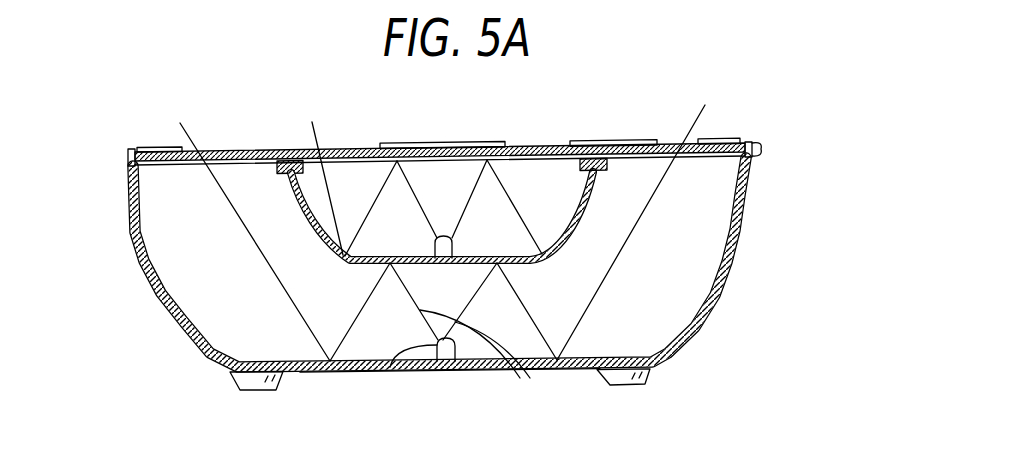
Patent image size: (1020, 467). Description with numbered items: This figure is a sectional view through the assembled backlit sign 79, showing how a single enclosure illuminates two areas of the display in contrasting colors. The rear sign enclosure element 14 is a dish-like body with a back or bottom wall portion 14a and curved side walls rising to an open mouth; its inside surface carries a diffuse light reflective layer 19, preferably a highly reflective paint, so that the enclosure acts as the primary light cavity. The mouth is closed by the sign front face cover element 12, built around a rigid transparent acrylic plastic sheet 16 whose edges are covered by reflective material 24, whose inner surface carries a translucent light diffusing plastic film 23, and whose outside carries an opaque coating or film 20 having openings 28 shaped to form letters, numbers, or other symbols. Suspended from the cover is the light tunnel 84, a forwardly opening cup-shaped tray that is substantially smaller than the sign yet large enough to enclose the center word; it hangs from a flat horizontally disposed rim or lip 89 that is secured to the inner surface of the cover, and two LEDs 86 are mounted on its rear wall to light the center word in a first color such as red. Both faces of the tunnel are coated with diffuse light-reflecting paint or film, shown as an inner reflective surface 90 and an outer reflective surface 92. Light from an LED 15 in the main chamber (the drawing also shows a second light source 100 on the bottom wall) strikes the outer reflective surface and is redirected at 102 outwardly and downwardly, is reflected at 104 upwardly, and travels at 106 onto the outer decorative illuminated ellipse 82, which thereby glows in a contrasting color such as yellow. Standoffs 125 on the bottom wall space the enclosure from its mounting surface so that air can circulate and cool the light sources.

The sign front face cover element 12 is at (763, 148).
The rear sign enclosure element 14 is at (742, 238).
The bottom wall portion 14a is at (477, 372).
The LED 15 is at (390, 367).
The transparent acrylic plastic sheet 16 is at (533, 147).
The diffuse light reflective layer 19 is at (152, 262).
The opaque coating or film 20 is at (715, 138).
The translucent light diffusing plastic film 23 is at (700, 160).
The edge reflective material 24 is at (128, 158).
The openings 28 is at (307, 200).
The sign 79 is at (124, 143).
The outer decorative illuminated ellipse 82 is at (213, 152).
The light tunnel 84 is at (297, 216).
The LEDs 86 is at (443, 234).
The rim or lip 89 is at (595, 172).
The inner reflective surface 90 is at (318, 225).
The outer reflective surface 92 is at (330, 259).
The second light source 100 is at (500, 366).
The redirected light 102 is at (490, 280).
The reflection point 104 is at (303, 362).
The upwardly reflected light 106 is at (250, 247).
The standoffs 125 is at (240, 390).